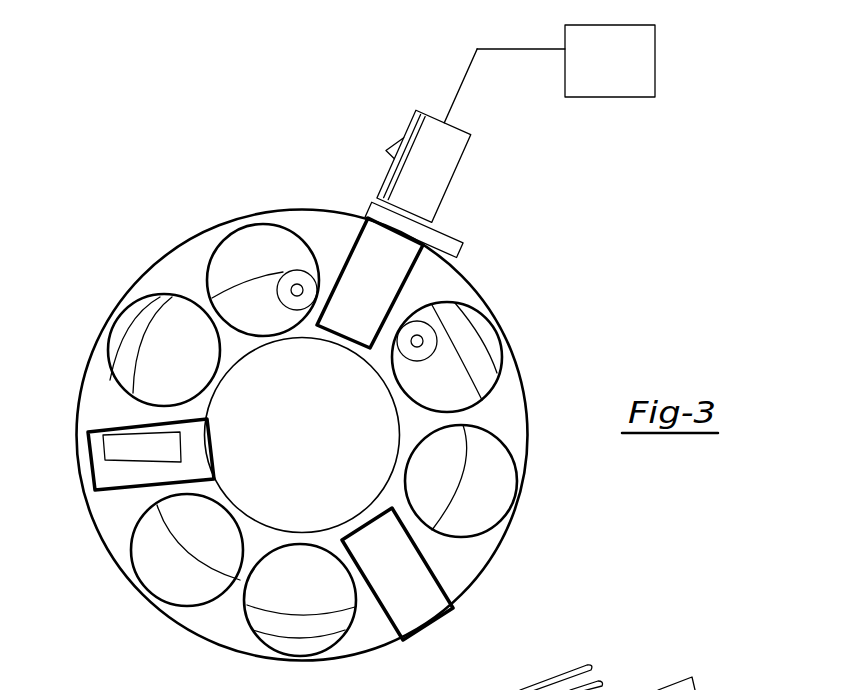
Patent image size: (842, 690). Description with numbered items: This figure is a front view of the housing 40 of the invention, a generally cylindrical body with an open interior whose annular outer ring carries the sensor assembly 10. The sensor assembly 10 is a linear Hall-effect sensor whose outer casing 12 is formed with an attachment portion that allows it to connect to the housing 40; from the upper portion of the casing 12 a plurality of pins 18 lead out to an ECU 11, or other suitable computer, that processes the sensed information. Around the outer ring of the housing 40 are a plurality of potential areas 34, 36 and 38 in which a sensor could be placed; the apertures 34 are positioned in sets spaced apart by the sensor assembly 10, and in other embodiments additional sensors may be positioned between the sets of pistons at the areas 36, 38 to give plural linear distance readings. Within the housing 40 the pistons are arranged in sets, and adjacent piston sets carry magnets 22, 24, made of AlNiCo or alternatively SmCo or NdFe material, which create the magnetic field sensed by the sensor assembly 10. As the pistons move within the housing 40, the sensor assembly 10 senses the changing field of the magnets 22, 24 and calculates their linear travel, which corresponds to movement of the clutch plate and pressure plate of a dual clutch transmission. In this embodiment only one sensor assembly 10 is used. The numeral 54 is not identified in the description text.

The sensor assembly 10 is at (545, 217).
The ECU 11 is at (655, 80).
The outer casing 12 is at (434, 168).
The pins 18 is at (603, 689).
The magnet 22 is at (296, 303).
The magnet 24 is at (413, 353).
The apertures 34 is at (347, 328).
The potential area 36 is at (118, 471).
The potential area 38 is at (430, 592).
The housing 40 is at (150, 266).
The roller 54 is at (497, 677).